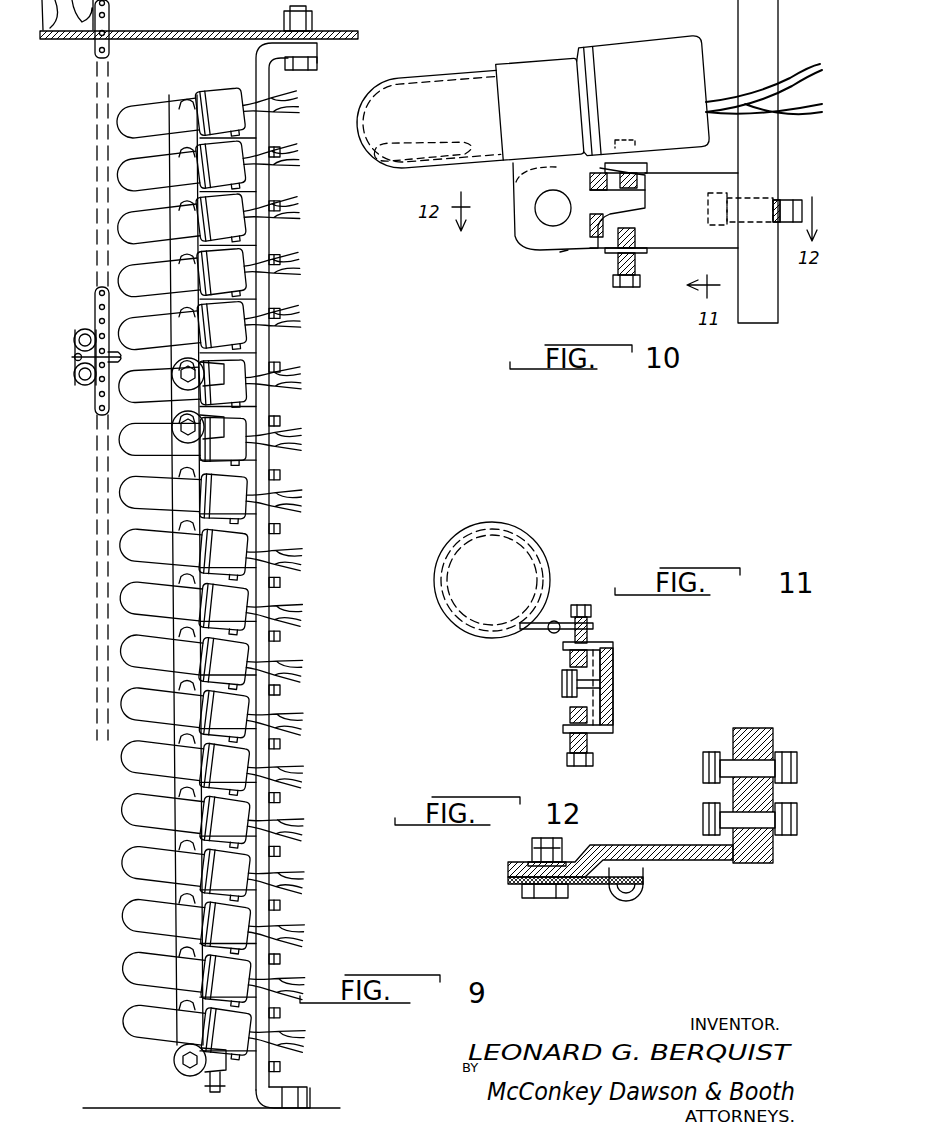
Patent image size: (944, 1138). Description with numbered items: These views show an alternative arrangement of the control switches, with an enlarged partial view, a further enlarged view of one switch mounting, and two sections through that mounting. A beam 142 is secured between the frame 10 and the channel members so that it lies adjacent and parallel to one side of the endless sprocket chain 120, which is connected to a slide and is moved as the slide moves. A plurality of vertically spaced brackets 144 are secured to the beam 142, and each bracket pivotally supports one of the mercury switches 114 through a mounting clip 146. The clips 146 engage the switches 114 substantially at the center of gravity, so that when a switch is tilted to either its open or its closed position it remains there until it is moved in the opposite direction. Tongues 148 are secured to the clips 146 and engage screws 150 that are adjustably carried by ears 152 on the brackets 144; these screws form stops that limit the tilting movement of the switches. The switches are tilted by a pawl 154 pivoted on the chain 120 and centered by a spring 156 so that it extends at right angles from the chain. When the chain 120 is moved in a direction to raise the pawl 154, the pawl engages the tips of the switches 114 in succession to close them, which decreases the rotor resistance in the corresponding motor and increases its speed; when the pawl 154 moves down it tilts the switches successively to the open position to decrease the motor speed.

In FIG. 9, the frame 10 is at (322, 1110).
In FIG. 9, the mercury switch 114 is at (230, 490).
In FIG. 10, the mercury switch 114 is at (455, 75).
In FIG. 11, the mercury switch 114 is at (545, 556).
In FIG. 9, the sprocket chain 120 is at (95, 82).
In FIG. 9, the beam 142 is at (273, 596).
In FIG. 10, the beam 142 is at (755, 323).
In FIG. 12, the beam 142 is at (752, 730).
In FIG. 9, the bracket 144 is at (253, 760).
In FIG. 10, the bracket 144 is at (662, 250).
In FIG. 11, the bracket 144 is at (615, 680).
In FIG. 12, the bracket 144 is at (672, 845).
In FIG. 9, the mounting clip 146 is at (173, 593).
In FIG. 10, the mounting clip 146 is at (517, 200).
In FIG. 11, the mounting clip 146 is at (560, 631).
In FIG. 10, the tongue 148 is at (573, 250).
In FIG. 12, the tongue 148 is at (578, 884).
In FIG. 10, the screw 150 is at (640, 196).
In FIG. 11, the screw 150 is at (590, 627).
In FIG. 10, the ear 152 is at (647, 167).
In FIG. 11, the ear 152 is at (562, 656).
In FIG. 12, the ear 152 is at (638, 896).
In FIG. 9, the pawl 154 is at (76, 352).
In FIG. 9, the spring 156 is at (86, 393).